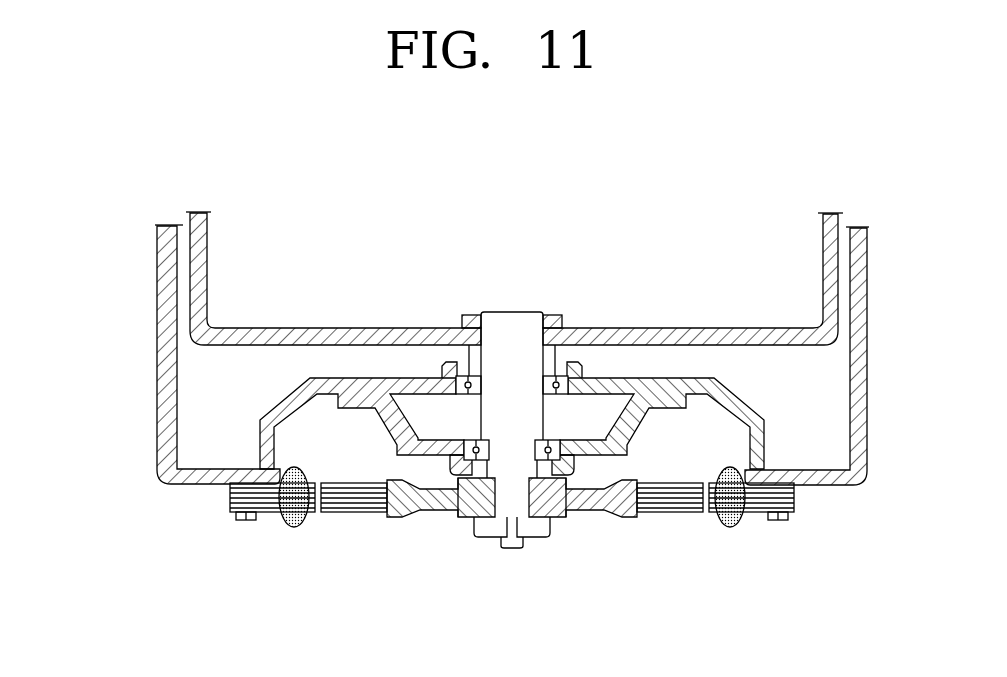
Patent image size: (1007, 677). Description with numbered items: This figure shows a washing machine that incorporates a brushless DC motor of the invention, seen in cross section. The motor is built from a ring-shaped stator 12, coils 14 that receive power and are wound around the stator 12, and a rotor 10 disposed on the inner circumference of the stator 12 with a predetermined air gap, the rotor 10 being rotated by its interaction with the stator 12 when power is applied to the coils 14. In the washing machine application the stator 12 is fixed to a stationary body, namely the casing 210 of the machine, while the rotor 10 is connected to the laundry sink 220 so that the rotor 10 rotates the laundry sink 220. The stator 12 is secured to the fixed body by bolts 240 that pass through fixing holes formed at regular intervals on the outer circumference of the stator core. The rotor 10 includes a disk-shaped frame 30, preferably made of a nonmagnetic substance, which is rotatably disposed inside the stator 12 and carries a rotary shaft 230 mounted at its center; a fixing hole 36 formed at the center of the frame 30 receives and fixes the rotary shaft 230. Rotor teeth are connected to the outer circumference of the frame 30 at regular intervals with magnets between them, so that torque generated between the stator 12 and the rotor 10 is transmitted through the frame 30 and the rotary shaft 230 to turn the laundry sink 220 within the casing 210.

The rotor 10 is at (354, 515).
The stator 12 is at (453, 550).
The coils 14 is at (301, 528).
The frame 30 is at (437, 513).
The fixing hole 36 is at (503, 549).
The casing 210 is at (166, 359).
The laundry sink 220 is at (803, 350).
The rotary shaft 230 is at (529, 454).
The bolts 240 is at (223, 513).